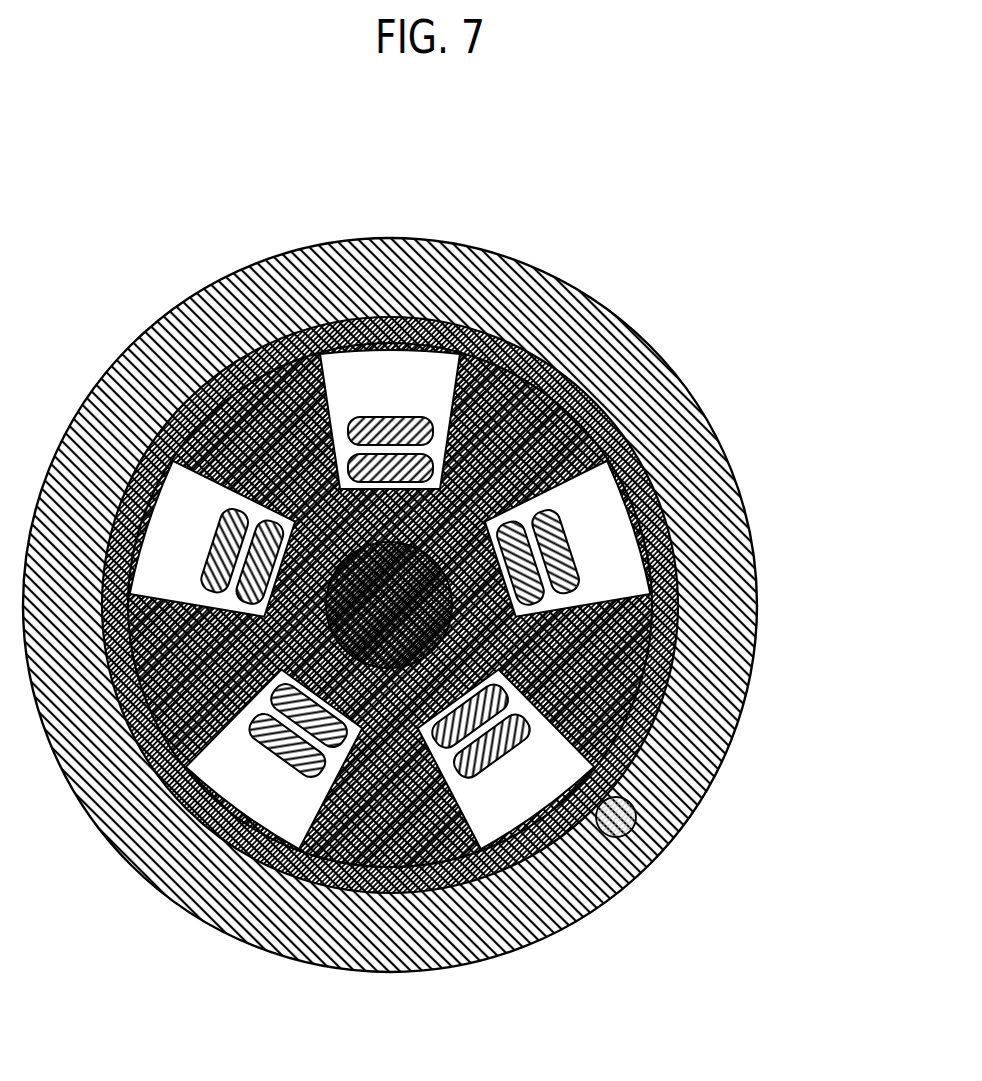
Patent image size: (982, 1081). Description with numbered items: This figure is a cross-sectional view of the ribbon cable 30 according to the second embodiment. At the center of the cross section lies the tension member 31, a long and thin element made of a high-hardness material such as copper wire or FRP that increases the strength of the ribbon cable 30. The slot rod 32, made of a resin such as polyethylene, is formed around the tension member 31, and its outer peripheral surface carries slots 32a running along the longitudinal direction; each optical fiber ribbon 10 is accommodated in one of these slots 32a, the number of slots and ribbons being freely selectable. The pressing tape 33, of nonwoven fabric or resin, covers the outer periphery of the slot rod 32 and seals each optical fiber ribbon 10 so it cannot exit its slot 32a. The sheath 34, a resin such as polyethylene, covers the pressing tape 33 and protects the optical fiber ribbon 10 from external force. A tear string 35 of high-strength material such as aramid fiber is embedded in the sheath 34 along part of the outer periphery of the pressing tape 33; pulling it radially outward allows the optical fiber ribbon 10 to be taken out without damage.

The ribbon cable 30 is at (436, 575).
The tension member 31 is at (436, 605).
The slot rod 32 is at (465, 605).
The slot 32a is at (620, 585).
The pressing tape 33 is at (687, 588).
The sheath 34 is at (730, 752).
The tear string 35 is at (634, 828).
The optical fiber ribbon 10 is at (572, 540).